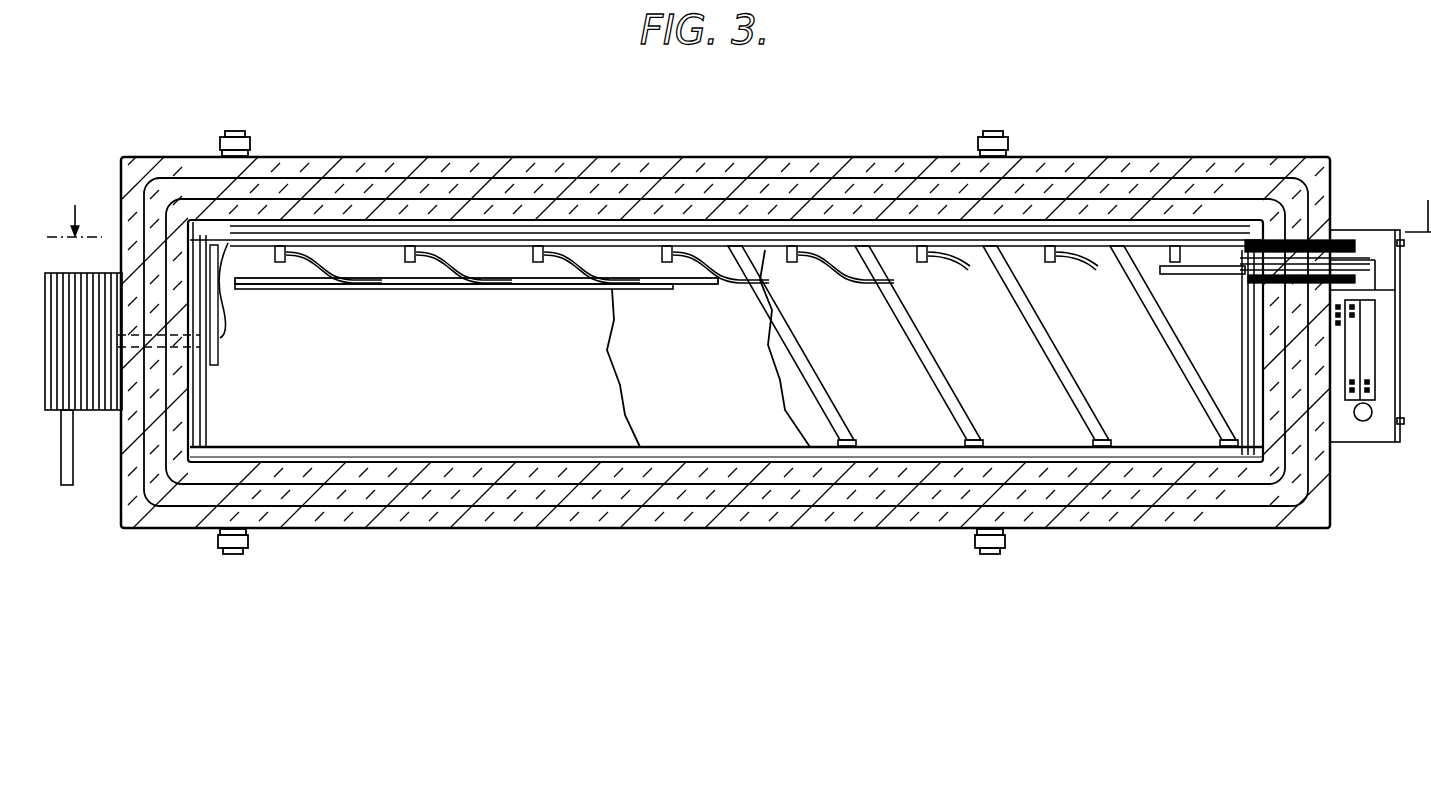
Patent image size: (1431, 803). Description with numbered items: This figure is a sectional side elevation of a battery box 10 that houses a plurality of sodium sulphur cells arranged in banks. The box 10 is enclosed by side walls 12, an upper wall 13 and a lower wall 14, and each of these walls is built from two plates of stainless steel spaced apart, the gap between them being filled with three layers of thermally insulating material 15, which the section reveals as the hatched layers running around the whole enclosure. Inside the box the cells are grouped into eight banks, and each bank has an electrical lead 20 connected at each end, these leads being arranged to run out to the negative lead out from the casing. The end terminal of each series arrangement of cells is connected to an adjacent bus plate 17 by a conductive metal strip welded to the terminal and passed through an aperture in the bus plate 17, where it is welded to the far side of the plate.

The battery box 10 is at (1126, 138).
The side wall 12 is at (124, 190).
The upper wall 13 is at (748, 158).
The lower wall 14 is at (630, 532).
The thermally insulating material 15 is at (395, 520).
The bus plate 17 is at (598, 246).
The electrical lead 20 is at (331, 258).